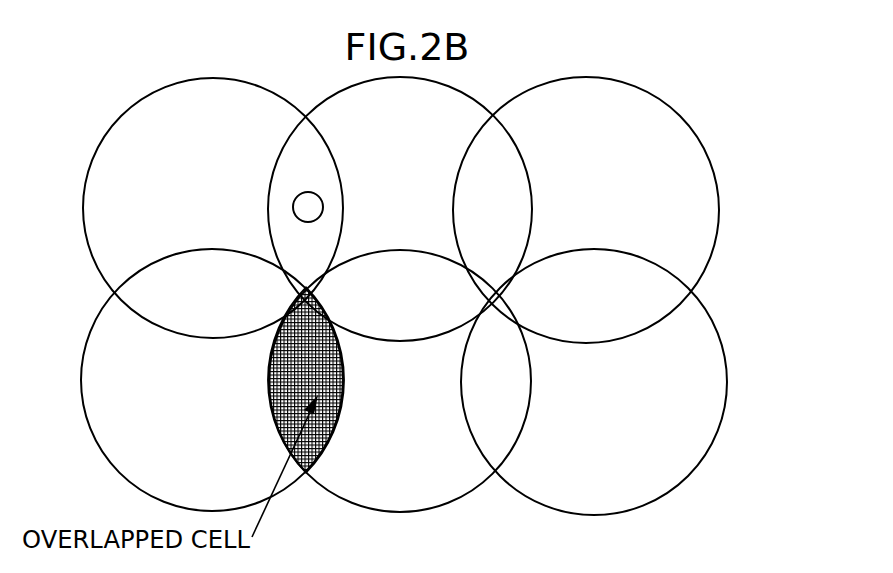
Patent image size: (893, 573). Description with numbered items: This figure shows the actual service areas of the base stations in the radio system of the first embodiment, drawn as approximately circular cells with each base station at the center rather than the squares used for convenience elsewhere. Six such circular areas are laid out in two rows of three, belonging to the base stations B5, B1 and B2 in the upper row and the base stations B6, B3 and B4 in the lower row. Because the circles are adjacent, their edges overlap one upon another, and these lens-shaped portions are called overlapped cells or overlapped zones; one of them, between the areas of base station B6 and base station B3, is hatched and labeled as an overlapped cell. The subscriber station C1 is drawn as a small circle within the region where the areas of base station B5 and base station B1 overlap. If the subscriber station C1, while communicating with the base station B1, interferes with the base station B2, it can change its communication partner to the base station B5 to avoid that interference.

The base station B1 is at (400, 209).
The base station B2 is at (586, 210).
The base station B3 is at (400, 381).
The base station B4 is at (594, 382).
The base station B5 is at (213, 208).
The base station B6 is at (212, 380).
The subscriber station C1 is at (307, 186).